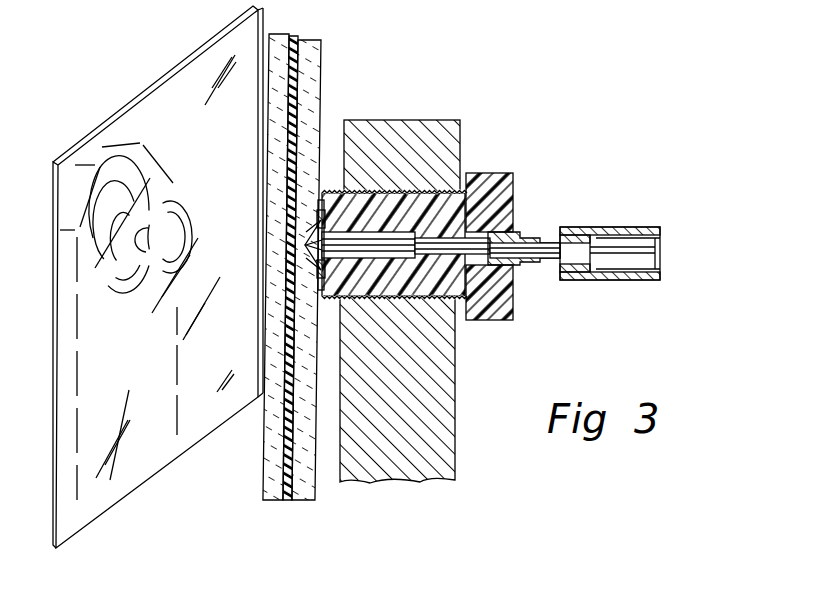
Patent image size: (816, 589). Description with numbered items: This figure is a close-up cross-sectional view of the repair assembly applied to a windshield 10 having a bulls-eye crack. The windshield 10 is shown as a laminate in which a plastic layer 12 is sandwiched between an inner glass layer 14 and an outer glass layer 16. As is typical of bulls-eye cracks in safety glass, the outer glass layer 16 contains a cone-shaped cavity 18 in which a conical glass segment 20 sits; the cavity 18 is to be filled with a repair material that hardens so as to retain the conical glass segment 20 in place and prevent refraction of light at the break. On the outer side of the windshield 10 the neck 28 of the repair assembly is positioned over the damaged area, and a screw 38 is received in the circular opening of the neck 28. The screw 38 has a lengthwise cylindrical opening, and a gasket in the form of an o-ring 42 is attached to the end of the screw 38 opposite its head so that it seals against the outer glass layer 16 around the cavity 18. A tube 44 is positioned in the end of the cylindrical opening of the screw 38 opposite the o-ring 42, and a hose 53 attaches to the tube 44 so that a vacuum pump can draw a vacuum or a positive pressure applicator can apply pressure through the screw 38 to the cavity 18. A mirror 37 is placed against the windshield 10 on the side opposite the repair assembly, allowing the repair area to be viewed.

The mirror 37 is at (167, 118).
The o-ring 42 is at (321, 196).
The conical glass segment 20 is at (312, 240).
The cone-shaped cavity 18 is at (298, 270).
The screw 38 is at (498, 200).
The tube 44 is at (543, 267).
The hose 53 is at (633, 280).
The neck 28 is at (445, 383).
The inner glass layer 14 is at (252, 270).
The plastic layer 12 is at (274, 289).
The outer glass layer 16 is at (332, 282).
The windshield 10 is at (296, 505).